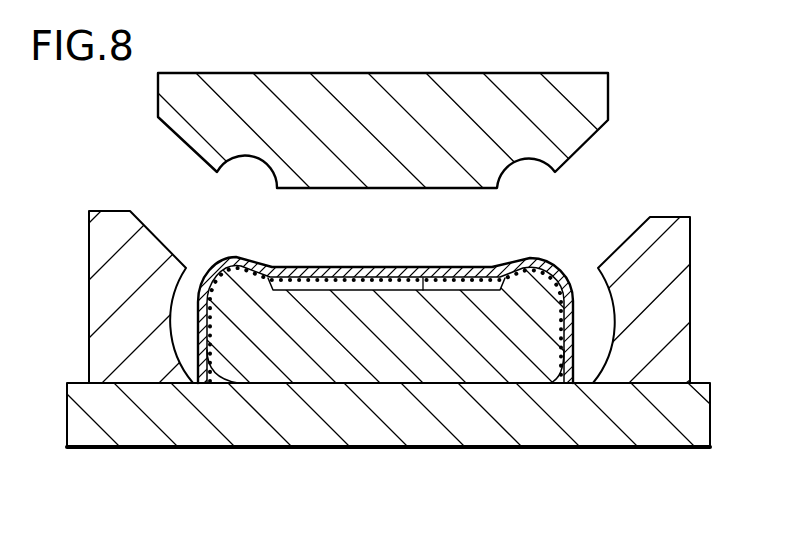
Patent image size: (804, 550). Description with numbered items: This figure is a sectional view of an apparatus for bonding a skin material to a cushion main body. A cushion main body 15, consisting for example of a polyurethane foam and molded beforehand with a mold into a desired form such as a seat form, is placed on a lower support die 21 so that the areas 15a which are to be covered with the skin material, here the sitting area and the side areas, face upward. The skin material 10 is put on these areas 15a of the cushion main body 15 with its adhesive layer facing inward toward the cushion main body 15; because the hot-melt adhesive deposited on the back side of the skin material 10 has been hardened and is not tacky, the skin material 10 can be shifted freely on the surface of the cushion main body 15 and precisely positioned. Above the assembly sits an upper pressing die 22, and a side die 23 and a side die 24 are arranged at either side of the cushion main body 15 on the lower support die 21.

The skin material 10 is at (487, 265).
The cushion main body 15 is at (394, 351).
The areas to be covered with the skin material 15a is at (427, 268).
The lower support die 21 is at (537, 440).
The upper pressing die 22 is at (470, 86).
The side die 23 is at (113, 217).
The side die 24 is at (668, 220).